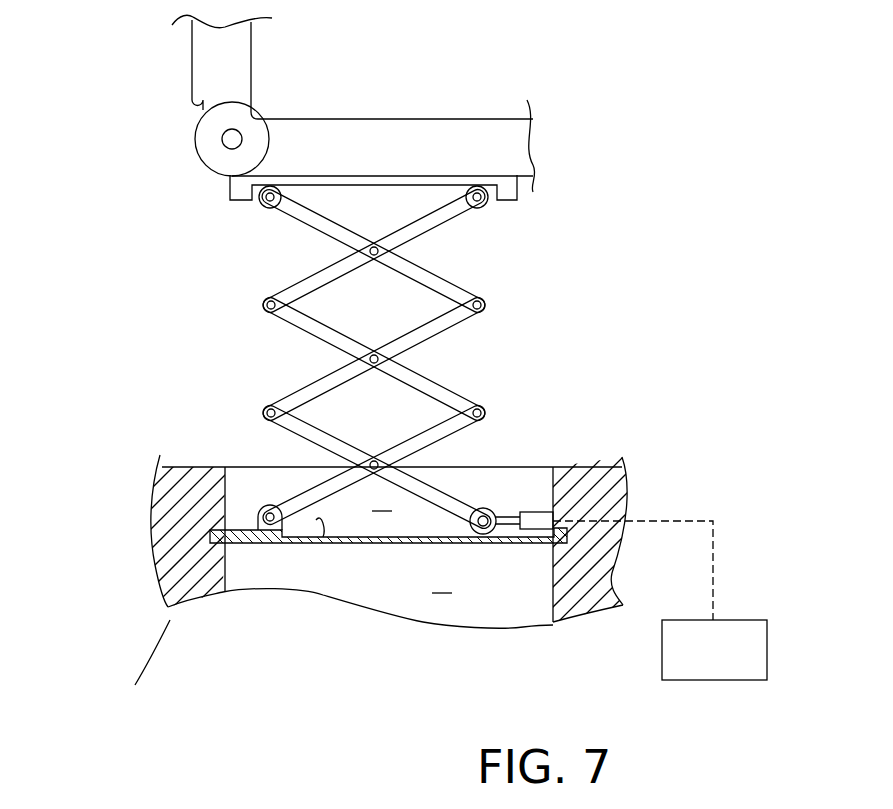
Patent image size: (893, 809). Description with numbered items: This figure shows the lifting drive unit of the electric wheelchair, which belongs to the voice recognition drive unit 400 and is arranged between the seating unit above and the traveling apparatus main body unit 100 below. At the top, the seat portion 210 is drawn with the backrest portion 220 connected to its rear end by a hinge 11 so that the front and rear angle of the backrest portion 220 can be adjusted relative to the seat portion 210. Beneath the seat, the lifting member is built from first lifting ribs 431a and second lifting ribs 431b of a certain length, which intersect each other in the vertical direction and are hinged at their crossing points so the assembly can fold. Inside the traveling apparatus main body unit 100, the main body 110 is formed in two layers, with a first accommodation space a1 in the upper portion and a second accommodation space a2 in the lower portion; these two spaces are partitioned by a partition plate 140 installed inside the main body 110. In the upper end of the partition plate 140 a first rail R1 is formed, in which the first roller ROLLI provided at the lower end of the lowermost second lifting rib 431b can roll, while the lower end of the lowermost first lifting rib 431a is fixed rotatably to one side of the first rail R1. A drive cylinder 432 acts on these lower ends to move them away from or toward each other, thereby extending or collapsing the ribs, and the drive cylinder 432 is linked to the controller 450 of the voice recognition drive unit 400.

The hinge shaft 11 is at (227, 142).
The traveling apparatus main body unit 100 is at (172, 616).
The main body 110 is at (188, 578).
The partition plate 140 is at (252, 545).
The seat portion 210 is at (442, 137).
The backrest portion 220 is at (232, 60).
The voice recognition drive unit 400 is at (461, 460).
The first lifting ribs 431a is at (448, 322).
The second lifting ribs 431b is at (426, 278).
The drive cylinder 432 is at (545, 507).
The controller 450 is at (717, 680).
The first rail R1 is at (323, 537).
The first accommodation space a1 is at (378, 512).
The second accommodation space a2 is at (440, 593).
The first roller ROLLI is at (492, 542).